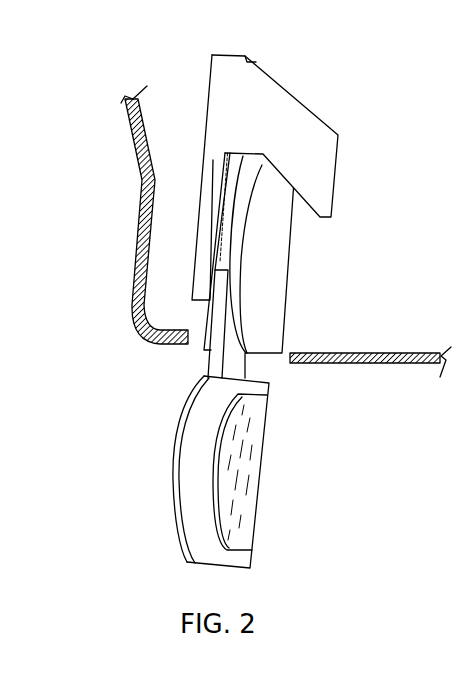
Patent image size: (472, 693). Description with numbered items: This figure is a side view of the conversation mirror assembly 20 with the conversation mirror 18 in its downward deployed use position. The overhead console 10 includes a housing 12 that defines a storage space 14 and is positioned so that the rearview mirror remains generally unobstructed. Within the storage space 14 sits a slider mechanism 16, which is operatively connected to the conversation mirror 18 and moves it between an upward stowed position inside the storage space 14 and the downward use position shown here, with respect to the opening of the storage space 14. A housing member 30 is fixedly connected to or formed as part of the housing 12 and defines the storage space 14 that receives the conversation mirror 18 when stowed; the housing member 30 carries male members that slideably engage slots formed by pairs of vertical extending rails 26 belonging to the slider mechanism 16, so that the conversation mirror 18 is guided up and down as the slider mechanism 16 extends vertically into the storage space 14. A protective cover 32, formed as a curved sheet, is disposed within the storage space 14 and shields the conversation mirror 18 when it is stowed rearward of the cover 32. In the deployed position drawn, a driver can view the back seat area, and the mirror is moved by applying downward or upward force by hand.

The overhead console 10 is at (93, 237).
The housing 12 is at (360, 364).
The storage space 14 is at (241, 178).
The slider mechanism 16 is at (197, 314).
The conversation mirror 18 is at (266, 433).
The conversation mirror assembly 20 is at (318, 436).
The vertical extending rails 26 is at (201, 348).
The housing member 30 is at (228, 72).
The protective cover 32 is at (273, 260).